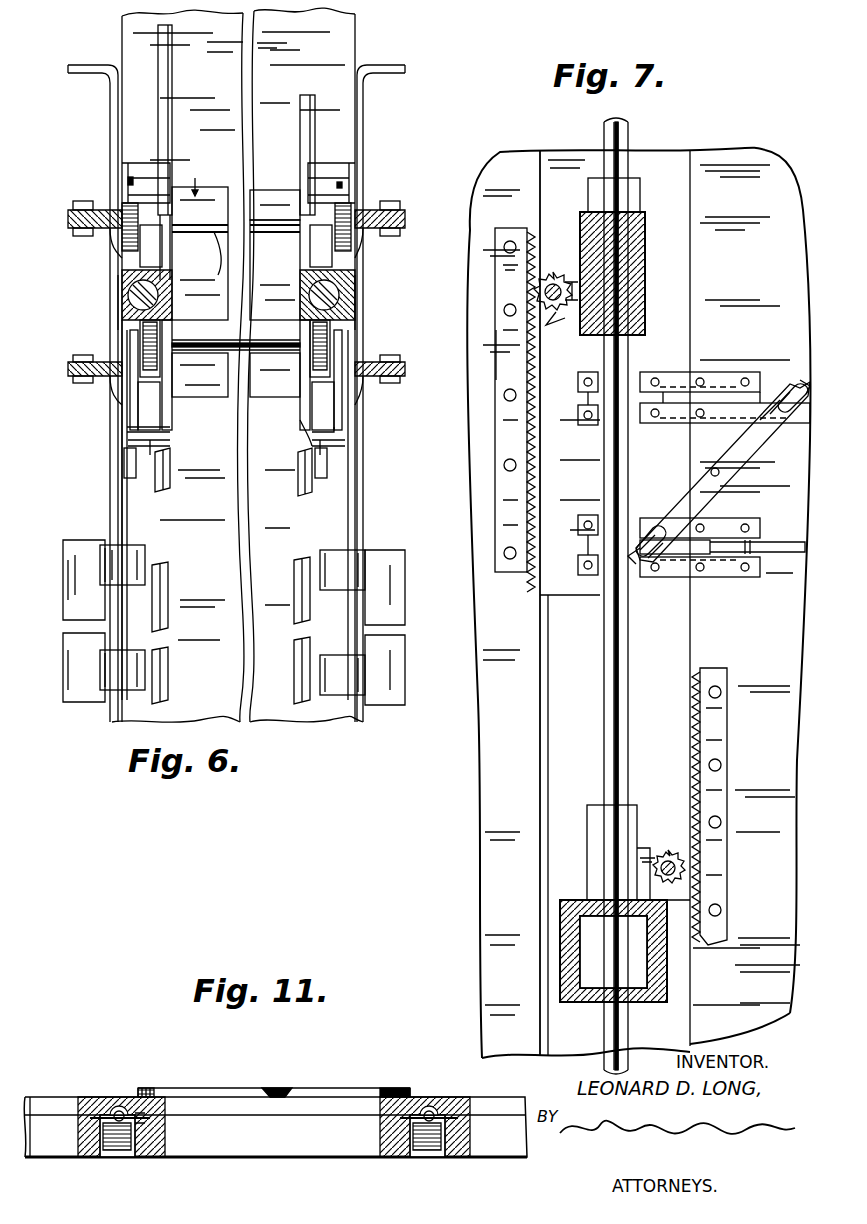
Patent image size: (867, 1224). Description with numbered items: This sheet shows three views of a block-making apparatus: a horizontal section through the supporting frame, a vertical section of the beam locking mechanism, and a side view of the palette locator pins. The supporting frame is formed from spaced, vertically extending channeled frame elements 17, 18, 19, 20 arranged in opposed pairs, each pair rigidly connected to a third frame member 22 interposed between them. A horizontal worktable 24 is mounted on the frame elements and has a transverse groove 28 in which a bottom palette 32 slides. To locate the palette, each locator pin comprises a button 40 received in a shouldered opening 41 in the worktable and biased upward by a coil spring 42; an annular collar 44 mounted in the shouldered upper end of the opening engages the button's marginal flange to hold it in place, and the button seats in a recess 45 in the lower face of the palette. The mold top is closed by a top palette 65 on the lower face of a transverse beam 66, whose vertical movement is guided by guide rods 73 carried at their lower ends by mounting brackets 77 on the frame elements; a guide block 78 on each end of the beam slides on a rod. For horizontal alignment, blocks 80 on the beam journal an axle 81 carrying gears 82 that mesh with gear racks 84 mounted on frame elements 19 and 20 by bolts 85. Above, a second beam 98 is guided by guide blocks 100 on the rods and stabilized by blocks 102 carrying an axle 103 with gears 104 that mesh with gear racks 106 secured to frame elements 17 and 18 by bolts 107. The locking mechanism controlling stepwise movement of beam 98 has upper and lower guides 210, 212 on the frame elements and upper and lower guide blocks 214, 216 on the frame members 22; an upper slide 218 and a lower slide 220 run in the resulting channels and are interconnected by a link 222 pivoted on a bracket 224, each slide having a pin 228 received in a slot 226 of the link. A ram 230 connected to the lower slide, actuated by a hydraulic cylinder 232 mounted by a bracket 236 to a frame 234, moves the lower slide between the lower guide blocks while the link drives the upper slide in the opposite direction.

In FIG. 6, the frame element 17 is at (110, 128).
In FIG. 6, the frame element 18 is at (363, 128).
In FIG. 7, the frame element 18 is at (478, 730).
In FIG. 6, the frame element 19 is at (120, 445).
In FIG. 6, the frame element 20 is at (355, 456).
In FIG. 7, the frame element 20 is at (760, 971).
In FIG. 6, the frame member 22 is at (112, 290).
In FIG. 7, the frame member 22 is at (572, 585).
In FIG. 6, the worktable 24 is at (297, 80).
In FIG. 11, the worktable 24 is at (48, 1086).
In FIG. 11, the groove 28 is at (78, 1105).
In FIG. 11, the bottom palette 32 is at (281, 1080).
In FIG. 11, the button 40 is at (112, 1102).
In FIG. 11, the shouldered opening 41 is at (420, 1155).
In FIG. 11, the coil spring 42 is at (395, 1158).
In FIG. 11, the annular collar 44 is at (140, 1112).
In FIG. 11, the recess 45 is at (135, 1112).
In FIG. 6, the top palette 65 is at (197, 177).
In FIG. 7, the beam 66 is at (668, 972).
In FIG. 6, the guide rod 73 is at (122, 280).
In FIG. 7, the guide rod 73 is at (624, 146).
In FIG. 6, the mounting bracket 77 is at (150, 165).
In FIG. 7, the guide block 78 is at (612, 852).
In FIG. 6, the block 80 is at (299, 434).
In FIG. 7, the block 80 is at (640, 835).
In FIG. 6, the axle 81 is at (262, 352).
In FIG. 7, the axle 81 is at (645, 855).
In FIG. 6, the gear 82 is at (340, 343).
In FIG. 7, the gear 82 is at (672, 848).
In FIG. 6, the gear rack 84 is at (350, 360).
In FIG. 7, the gear rack 84 is at (720, 742).
In FIG. 7, the bolt 85 is at (720, 688).
In FIG. 6, the beam 98 is at (236, 253).
In FIG. 7, the beam 98 is at (635, 312).
In FIG. 6, the guide block 100 is at (350, 280).
In FIG. 7, the guide block 100 is at (632, 196).
In FIG. 6, the block 102 is at (154, 262).
In FIG. 7, the block 102 is at (572, 272).
In FIG. 6, the axle 103 is at (215, 230).
In FIG. 7, the axle 103 is at (552, 270).
In FIG. 6, the gear 104 is at (120, 240).
In FIG. 7, the gear 104 is at (552, 318).
In FIG. 6, the gear rack 106 is at (125, 190).
In FIG. 7, the gear rack 106 is at (500, 368).
In FIG. 7, the bolt 107 is at (510, 398).
In FIG. 6, the upper guide 210 is at (125, 406).
In FIG. 7, the upper guide 210 is at (725, 378).
In FIG. 7, the lower guide 212 is at (730, 535).
In FIG. 7, the upper guide block 214 is at (578, 380).
In FIG. 7, the lower guide block 216 is at (580, 562).
In FIG. 7, the upper slide 218 is at (700, 400).
In FIG. 7, the lower slide 220 is at (675, 547).
In FIG. 6, the link 222 is at (140, 350).
In FIG. 7, the link 222 is at (748, 432).
In FIG. 7, the bracket 224 is at (704, 465).
In FIG. 7, the slot 226 is at (788, 385).
In FIG. 6, the pin 228 is at (340, 428).
In FIG. 7, the pin 228 is at (806, 396).
In FIG. 6, the ram 230 is at (152, 468).
In FIG. 7, the ram 230 is at (782, 556).
In FIG. 6, the hydraulic cylinder 232 is at (140, 648).
In FIG. 6, the frame 234 is at (63, 568).
In FIG. 6, the bracket 236 is at (145, 560).